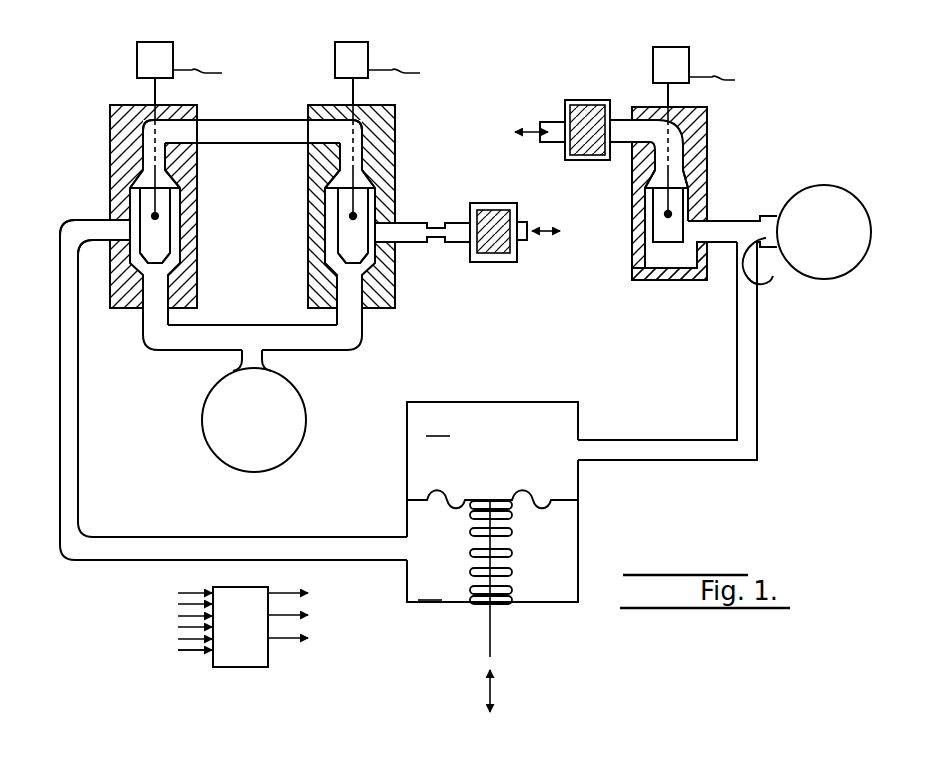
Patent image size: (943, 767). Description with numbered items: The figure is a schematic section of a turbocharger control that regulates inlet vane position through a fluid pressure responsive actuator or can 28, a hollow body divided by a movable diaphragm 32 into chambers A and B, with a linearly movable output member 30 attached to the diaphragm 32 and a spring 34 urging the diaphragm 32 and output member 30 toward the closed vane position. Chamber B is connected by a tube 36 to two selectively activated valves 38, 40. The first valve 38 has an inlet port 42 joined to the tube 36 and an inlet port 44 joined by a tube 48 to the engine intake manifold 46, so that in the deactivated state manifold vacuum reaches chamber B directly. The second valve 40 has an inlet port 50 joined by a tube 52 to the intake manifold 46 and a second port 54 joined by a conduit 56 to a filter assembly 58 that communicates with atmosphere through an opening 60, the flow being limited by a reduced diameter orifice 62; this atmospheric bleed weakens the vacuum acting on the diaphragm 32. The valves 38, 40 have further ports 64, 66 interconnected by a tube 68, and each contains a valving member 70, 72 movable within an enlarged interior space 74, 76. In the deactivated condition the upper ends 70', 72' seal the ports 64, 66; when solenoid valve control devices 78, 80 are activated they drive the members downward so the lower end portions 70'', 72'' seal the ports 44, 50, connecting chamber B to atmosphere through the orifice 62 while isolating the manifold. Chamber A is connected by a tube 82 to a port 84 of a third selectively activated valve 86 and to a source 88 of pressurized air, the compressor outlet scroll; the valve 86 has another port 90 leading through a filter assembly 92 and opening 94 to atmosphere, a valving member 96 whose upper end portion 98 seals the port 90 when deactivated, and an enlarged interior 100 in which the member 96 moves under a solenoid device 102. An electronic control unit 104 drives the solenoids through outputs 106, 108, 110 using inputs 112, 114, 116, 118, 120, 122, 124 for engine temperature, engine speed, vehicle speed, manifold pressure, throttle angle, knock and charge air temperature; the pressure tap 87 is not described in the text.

The fluid pressure responsive actuator 28 is at (582, 576).
The output member 30 is at (489, 648).
The diaphragm 32 is at (460, 492).
The spring 34 is at (514, 553).
The tube 36 is at (66, 450).
The first valve 38 is at (201, 212).
The second valve 40 is at (306, 216).
The inlet port 42 is at (108, 222).
The inlet port 44 is at (148, 305).
The intake manifold 46 is at (308, 418).
The tube 48 is at (178, 350).
The inlet port 50 is at (364, 306).
The tube 52 is at (330, 350).
The second port 54 is at (402, 244).
The conduit 56 is at (420, 222).
The filter assembly 58 is at (497, 266).
The opening 60 is at (536, 226).
The orifice 62 is at (447, 228).
The port 64 is at (198, 128).
The port 66 is at (312, 124).
The tube 68 is at (252, 135).
The valving member 70 is at (189, 225).
The upper end 70' is at (124, 172).
The lower end portion 70'' is at (194, 267).
The valving member 72 is at (320, 184).
The upper end 72' is at (322, 179).
The lower end portion 72'' is at (320, 267).
The enlarged interior space 74 is at (170, 254).
The enlarged interior space 76 is at (398, 212).
The valve control device 78 is at (157, 46).
The valve control device 80 is at (354, 46).
The tube 82 is at (736, 386).
The port 84 is at (708, 224).
The third selectively activated valve 86 is at (629, 262).
The pressure tap 87 is at (770, 281).
The source of pressurized air 88 is at (821, 184).
The port 90 is at (630, 132).
The filter assembly 92 is at (587, 98).
The opening 94 is at (546, 142).
The valving member 96 is at (686, 212).
The upper end portion 98 is at (694, 184).
The enlarged interior 100 is at (660, 266).
The solenoid device 102 is at (677, 50).
The electronic control unit 104 is at (245, 668).
The output 106 is at (193, 70).
The output 108 is at (402, 70).
The output 110 is at (737, 77).
The input 112 is at (180, 593).
The input 114 is at (178, 604).
The input 116 is at (178, 616).
The input 118 is at (178, 627).
The input 120 is at (178, 639).
The input 122 is at (180, 650).
The input 124 is at (192, 653).